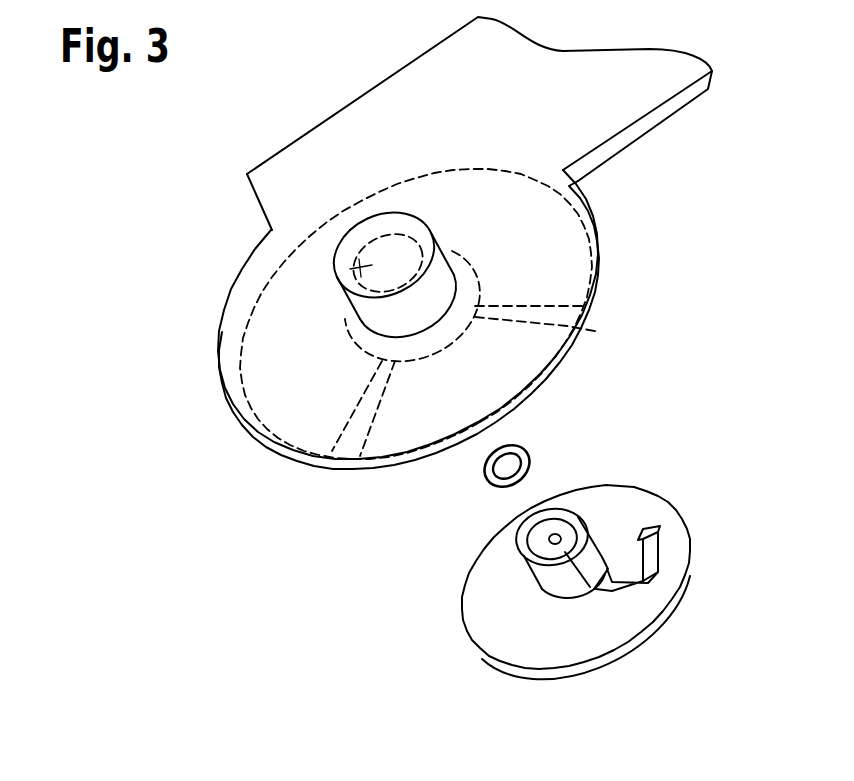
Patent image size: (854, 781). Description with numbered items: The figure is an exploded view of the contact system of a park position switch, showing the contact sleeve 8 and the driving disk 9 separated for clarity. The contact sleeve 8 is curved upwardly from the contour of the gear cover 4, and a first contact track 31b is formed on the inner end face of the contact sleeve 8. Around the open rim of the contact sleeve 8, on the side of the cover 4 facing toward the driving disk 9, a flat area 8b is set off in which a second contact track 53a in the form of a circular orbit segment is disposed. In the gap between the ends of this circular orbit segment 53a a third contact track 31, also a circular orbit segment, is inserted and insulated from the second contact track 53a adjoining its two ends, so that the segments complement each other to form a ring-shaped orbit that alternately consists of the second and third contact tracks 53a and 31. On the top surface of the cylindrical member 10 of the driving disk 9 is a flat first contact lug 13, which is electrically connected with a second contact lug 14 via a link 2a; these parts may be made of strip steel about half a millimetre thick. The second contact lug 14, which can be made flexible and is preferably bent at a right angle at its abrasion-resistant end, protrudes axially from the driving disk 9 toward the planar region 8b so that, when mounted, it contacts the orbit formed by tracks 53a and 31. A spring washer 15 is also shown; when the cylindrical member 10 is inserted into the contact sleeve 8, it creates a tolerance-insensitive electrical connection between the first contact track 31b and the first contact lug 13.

The gear cover 4 is at (280, 188).
The contact sleeve 8 is at (382, 313).
The flat area 8b is at (310, 474).
The third contact track 31 is at (528, 345).
The first contact track 31b is at (365, 268).
The second contact track 53a is at (561, 236).
The spring washer 15 is at (530, 460).
The first contact lug 13 is at (565, 527).
The cylindrical member 10 is at (545, 580).
The second contact lug 14 is at (650, 558).
The link 2a is at (613, 590).
The driving disk 9 is at (540, 673).